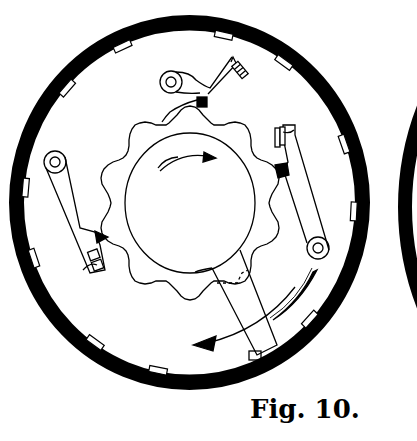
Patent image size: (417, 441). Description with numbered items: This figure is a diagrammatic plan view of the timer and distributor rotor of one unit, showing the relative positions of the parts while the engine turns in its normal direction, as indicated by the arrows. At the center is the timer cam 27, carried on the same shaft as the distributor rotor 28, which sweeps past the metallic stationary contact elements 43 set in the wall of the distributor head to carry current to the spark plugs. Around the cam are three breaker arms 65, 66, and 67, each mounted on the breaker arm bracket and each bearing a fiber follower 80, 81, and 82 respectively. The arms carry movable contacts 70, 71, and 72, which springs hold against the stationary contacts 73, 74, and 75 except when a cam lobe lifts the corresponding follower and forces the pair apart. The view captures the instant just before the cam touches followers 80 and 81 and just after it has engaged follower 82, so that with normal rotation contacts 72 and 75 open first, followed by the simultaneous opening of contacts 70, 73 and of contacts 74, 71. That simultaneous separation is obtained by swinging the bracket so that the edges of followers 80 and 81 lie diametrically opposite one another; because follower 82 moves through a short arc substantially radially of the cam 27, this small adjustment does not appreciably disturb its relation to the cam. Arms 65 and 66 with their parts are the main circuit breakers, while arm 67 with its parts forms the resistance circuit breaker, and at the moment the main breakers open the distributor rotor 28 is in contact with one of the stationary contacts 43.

The timer cam 27 is at (185, 125).
The distributor rotor 28 is at (242, 300).
The stationary contact elements 43 is at (250, 355).
The breaker arm 65 is at (72, 202).
The breaker arm 66 is at (303, 165).
The breaker arm 67 is at (200, 88).
The contact 70 is at (97, 265).
The contact 71 is at (290, 134).
The contact 72 is at (241, 64).
The stationary contact 73 is at (103, 252).
The stationary contact 74 is at (280, 127).
The stationary contact 75 is at (246, 73).
The fiber follower 80 is at (100, 233).
The fiber follower 81 is at (276, 168).
The fiber follower 82 is at (208, 101).